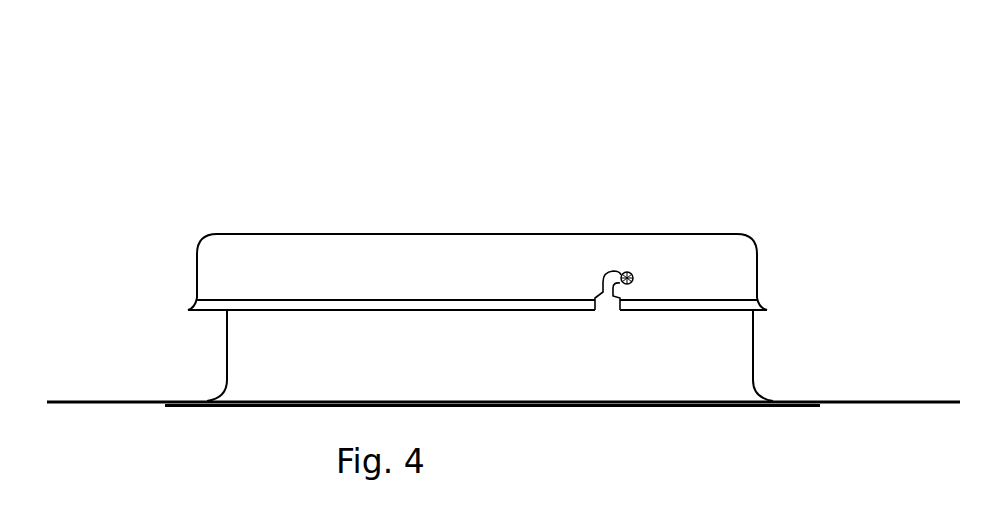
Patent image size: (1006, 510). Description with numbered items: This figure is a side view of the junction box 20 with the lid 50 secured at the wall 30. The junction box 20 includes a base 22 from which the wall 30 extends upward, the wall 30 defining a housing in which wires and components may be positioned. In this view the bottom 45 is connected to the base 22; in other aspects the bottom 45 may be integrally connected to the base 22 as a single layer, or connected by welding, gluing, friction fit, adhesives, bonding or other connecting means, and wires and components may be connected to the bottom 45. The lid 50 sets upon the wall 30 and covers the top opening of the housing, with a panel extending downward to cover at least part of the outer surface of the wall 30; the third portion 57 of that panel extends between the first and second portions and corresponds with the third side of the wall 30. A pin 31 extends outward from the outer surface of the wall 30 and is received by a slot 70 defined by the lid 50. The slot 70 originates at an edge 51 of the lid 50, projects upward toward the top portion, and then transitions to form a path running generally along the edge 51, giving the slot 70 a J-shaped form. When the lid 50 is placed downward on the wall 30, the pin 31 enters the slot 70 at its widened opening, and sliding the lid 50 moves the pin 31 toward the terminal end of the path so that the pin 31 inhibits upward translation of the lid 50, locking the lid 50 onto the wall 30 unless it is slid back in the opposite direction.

The junction box 20 is at (822, 117).
The base 22 is at (905, 398).
The wall 30 is at (214, 355).
The pin 31 is at (641, 270).
The bottom 45 is at (670, 406).
The lid 50 is at (273, 214).
The edge 51 is at (587, 313).
The third portion 57 is at (197, 273).
The slot 70 is at (601, 276).